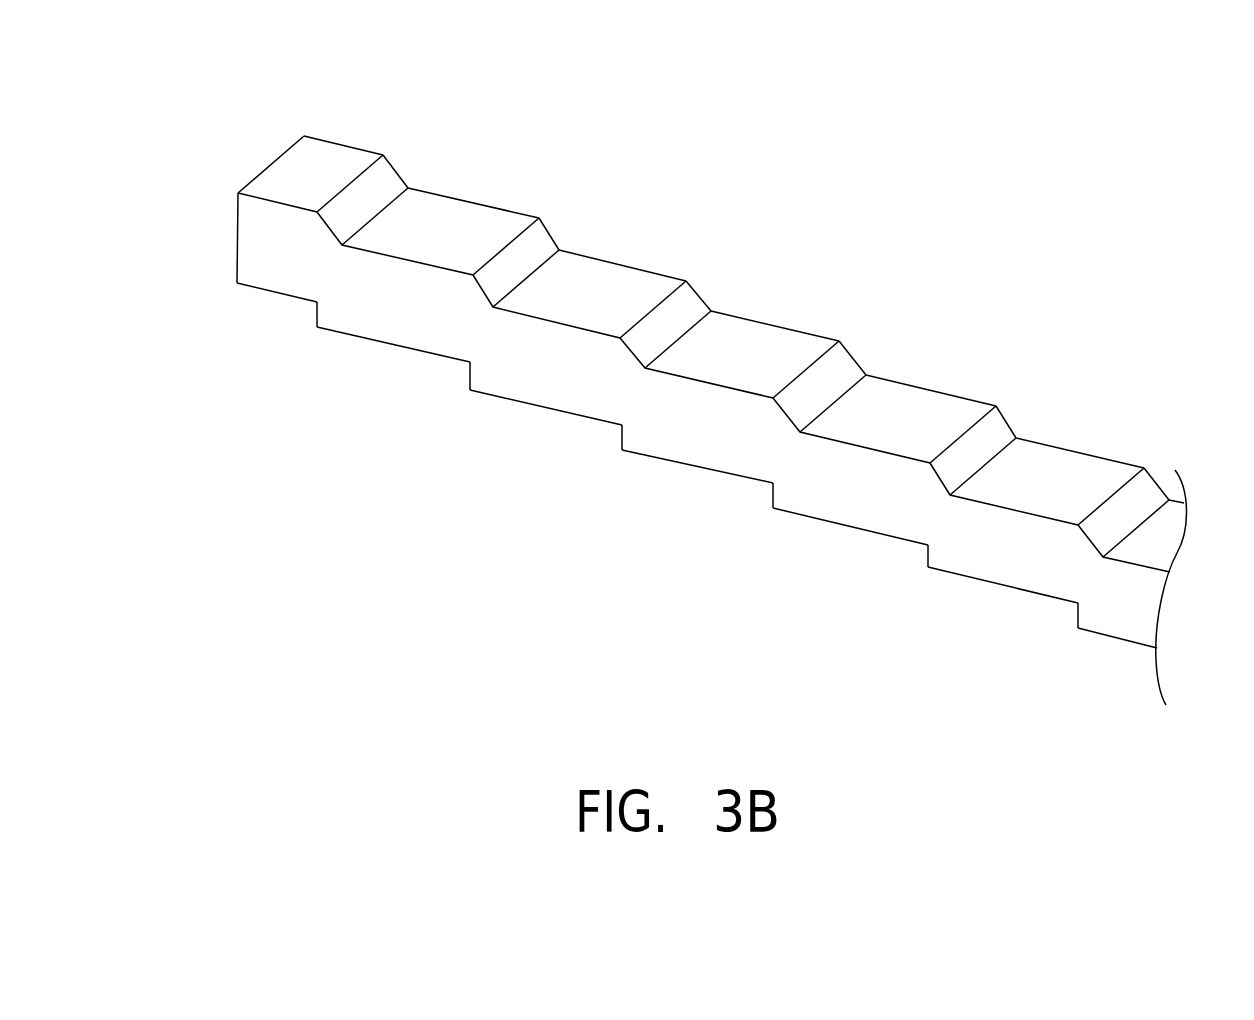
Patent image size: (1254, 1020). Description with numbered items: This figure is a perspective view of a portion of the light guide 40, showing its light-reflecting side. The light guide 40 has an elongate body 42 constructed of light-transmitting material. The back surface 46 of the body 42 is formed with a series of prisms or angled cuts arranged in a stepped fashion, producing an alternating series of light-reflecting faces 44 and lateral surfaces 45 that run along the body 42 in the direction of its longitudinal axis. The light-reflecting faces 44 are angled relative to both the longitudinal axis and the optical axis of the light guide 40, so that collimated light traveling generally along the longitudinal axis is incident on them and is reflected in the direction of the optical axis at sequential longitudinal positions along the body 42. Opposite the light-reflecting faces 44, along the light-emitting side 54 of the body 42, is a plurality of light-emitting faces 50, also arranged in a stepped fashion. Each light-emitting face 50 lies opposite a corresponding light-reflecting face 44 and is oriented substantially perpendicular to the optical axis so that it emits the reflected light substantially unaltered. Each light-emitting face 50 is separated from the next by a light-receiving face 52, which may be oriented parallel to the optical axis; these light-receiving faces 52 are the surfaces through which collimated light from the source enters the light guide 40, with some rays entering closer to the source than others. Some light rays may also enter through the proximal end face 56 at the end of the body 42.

The light guide 40 is at (897, 133).
The body 42 is at (668, 448).
The light-reflecting faces 44 is at (377, 202).
The lateral surfaces 45 is at (340, 158).
The back surface 46 is at (615, 275).
The light-emitting faces 50 is at (255, 290).
The light-receiving faces 52 is at (315, 320).
The light-emitting side 54 is at (853, 528).
The proximal end face 56 is at (237, 260).